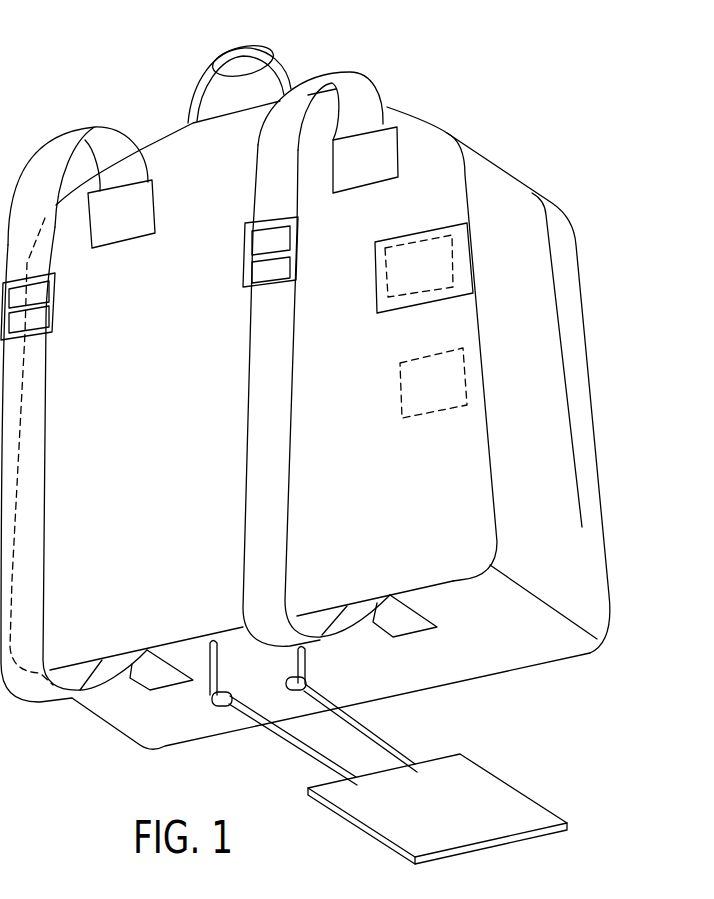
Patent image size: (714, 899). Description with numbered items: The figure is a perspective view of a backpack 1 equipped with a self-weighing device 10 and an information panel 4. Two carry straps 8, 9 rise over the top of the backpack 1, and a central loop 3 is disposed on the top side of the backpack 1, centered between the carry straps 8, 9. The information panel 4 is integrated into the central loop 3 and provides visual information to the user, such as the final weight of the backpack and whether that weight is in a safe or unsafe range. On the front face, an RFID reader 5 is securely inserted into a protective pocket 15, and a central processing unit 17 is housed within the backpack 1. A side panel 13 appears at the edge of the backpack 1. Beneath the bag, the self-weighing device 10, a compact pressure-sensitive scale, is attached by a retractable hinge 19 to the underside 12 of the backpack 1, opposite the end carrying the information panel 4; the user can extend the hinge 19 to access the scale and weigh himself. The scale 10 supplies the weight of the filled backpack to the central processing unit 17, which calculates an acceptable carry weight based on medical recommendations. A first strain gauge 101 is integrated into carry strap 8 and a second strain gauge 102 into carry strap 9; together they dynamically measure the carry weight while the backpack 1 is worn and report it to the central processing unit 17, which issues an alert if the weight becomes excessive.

The backpack 1 is at (575, 146).
The central loop 3 is at (290, 67).
The information panel 4 is at (240, 45).
The RFID reader 5 is at (453, 262).
The carry strap 8 is at (360, 72).
The carry strap 9 is at (80, 127).
The self-weighing device 10 is at (517, 790).
The underside 12 is at (160, 713).
The side panel 13 is at (465, 167).
The protective pocket 15 is at (423, 305).
The central processing unit 17 is at (467, 380).
The retractable hinge 19 is at (213, 700).
The Strain Gauge Number 1 101 is at (383, 152).
The Strain Gauge Number 2 102 is at (127, 213).